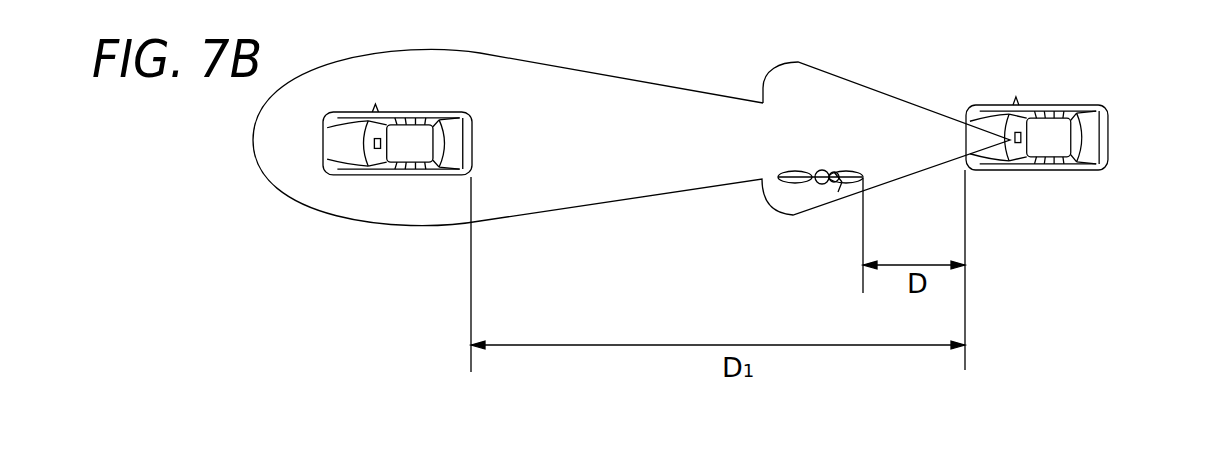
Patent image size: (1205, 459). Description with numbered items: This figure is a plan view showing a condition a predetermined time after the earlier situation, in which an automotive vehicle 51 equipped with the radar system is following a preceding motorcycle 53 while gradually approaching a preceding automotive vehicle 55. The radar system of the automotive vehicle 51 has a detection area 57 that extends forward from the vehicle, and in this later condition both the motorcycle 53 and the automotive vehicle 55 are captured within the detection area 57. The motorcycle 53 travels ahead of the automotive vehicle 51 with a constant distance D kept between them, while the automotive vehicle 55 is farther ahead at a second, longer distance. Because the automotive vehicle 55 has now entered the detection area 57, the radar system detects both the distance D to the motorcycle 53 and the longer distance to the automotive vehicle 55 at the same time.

The automotive vehicle 51 is at (1077, 170).
The motorcycle 53 is at (802, 185).
The preceding automotive vehicle 55 is at (382, 175).
The detection area 57 is at (653, 195).